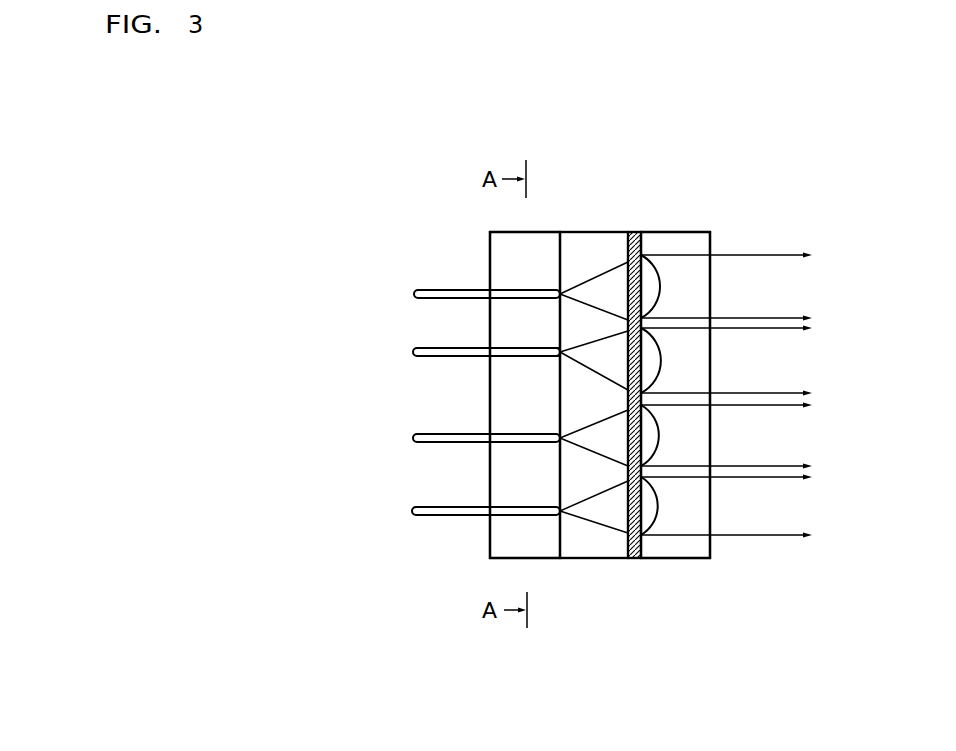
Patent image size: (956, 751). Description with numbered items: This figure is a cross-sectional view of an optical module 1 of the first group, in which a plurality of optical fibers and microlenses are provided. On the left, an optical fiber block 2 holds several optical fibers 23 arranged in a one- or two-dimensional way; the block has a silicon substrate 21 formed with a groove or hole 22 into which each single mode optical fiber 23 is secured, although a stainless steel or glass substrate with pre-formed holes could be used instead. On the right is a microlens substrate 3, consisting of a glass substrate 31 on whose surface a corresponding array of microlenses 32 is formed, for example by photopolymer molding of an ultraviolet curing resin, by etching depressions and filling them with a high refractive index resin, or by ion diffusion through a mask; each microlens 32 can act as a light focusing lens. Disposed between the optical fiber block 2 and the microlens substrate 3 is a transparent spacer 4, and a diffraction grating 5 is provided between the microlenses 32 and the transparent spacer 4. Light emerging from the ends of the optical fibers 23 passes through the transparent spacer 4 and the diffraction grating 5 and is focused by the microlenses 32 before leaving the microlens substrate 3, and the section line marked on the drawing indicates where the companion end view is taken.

The optical module 1 is at (590, 152).
The optical fiber block 2 is at (466, 270).
The silicon substrate 21 is at (500, 546).
The groove or hole 22 is at (542, 351).
The optical fiber 23 is at (415, 293).
The microlens substrate 3 is at (721, 213).
The glass substrate 31 is at (682, 238).
The microlens 32 is at (655, 359).
The transparent spacer 4 is at (577, 548).
The diffraction grating 5 is at (641, 232).